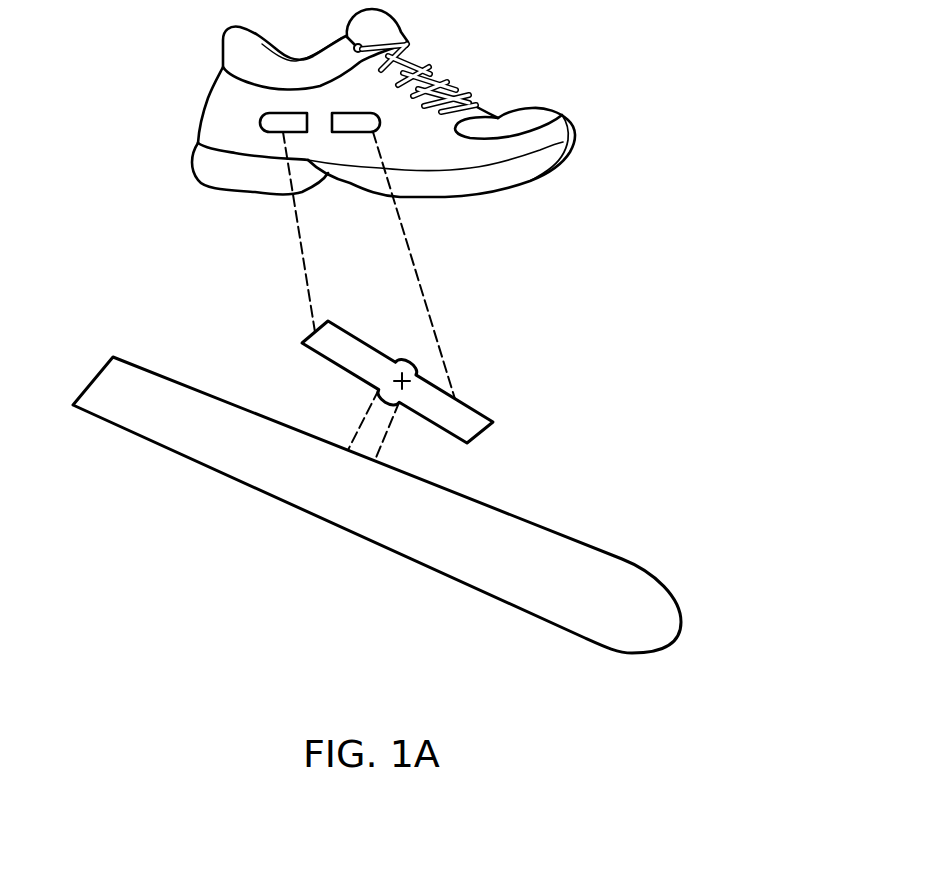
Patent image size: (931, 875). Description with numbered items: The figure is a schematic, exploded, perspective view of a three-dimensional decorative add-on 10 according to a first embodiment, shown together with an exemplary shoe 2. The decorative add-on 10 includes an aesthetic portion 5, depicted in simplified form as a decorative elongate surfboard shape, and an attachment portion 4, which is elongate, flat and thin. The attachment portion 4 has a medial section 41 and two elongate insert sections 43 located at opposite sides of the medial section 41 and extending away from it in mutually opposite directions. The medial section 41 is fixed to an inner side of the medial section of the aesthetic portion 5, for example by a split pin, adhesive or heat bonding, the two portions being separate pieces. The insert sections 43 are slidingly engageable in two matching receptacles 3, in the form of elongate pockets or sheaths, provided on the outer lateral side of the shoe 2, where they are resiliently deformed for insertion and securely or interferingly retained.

The shoe 2 is at (577, 143).
The receptacles 3 is at (258, 131).
The attachment portion 4 is at (473, 352).
The medial section 41 is at (420, 376).
The insert sections 43 is at (330, 345).
The aesthetic portion 5 is at (730, 466).
The decorative add-on 10 is at (435, 448).